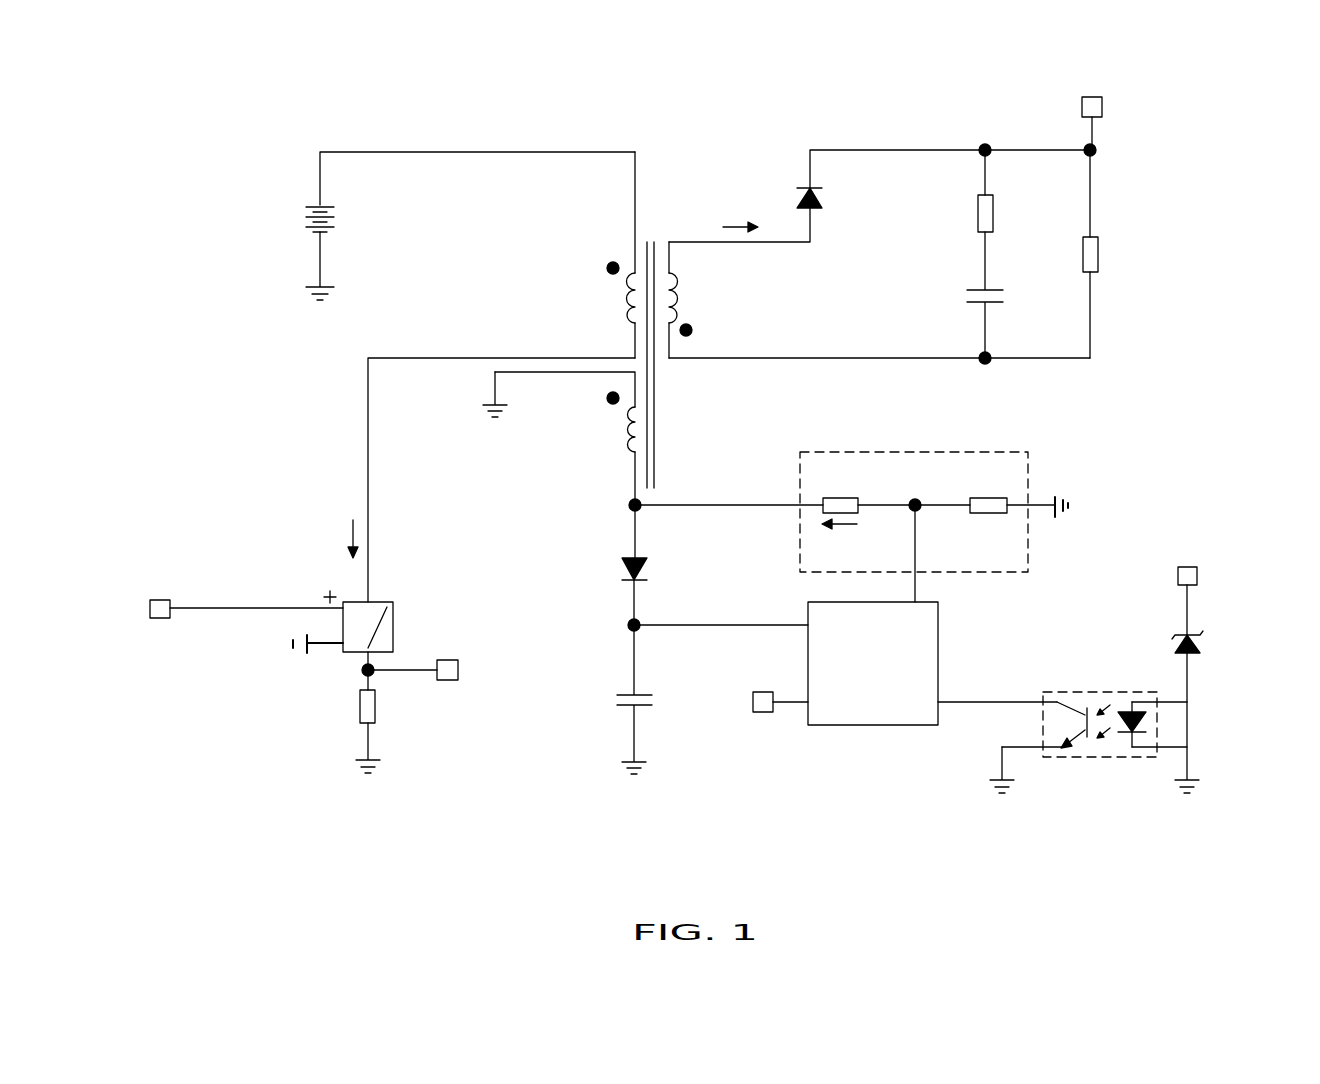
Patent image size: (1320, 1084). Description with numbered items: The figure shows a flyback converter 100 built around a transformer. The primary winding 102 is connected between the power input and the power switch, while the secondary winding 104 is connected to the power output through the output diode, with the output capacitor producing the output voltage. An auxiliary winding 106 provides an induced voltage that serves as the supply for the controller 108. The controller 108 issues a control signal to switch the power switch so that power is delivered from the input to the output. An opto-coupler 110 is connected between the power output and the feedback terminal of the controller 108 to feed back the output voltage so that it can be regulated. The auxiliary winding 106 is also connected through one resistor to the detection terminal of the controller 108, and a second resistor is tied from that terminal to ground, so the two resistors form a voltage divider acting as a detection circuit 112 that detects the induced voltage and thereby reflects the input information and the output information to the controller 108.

The flyback converter 100 is at (1226, 160).
The primary winding 102 is at (600, 273).
The secondary winding 104 is at (700, 311).
The auxiliary winding 106 is at (605, 445).
The controller 108 is at (940, 646).
The opto-coupler 110 is at (1100, 692).
The detection circuit 112 is at (912, 452).